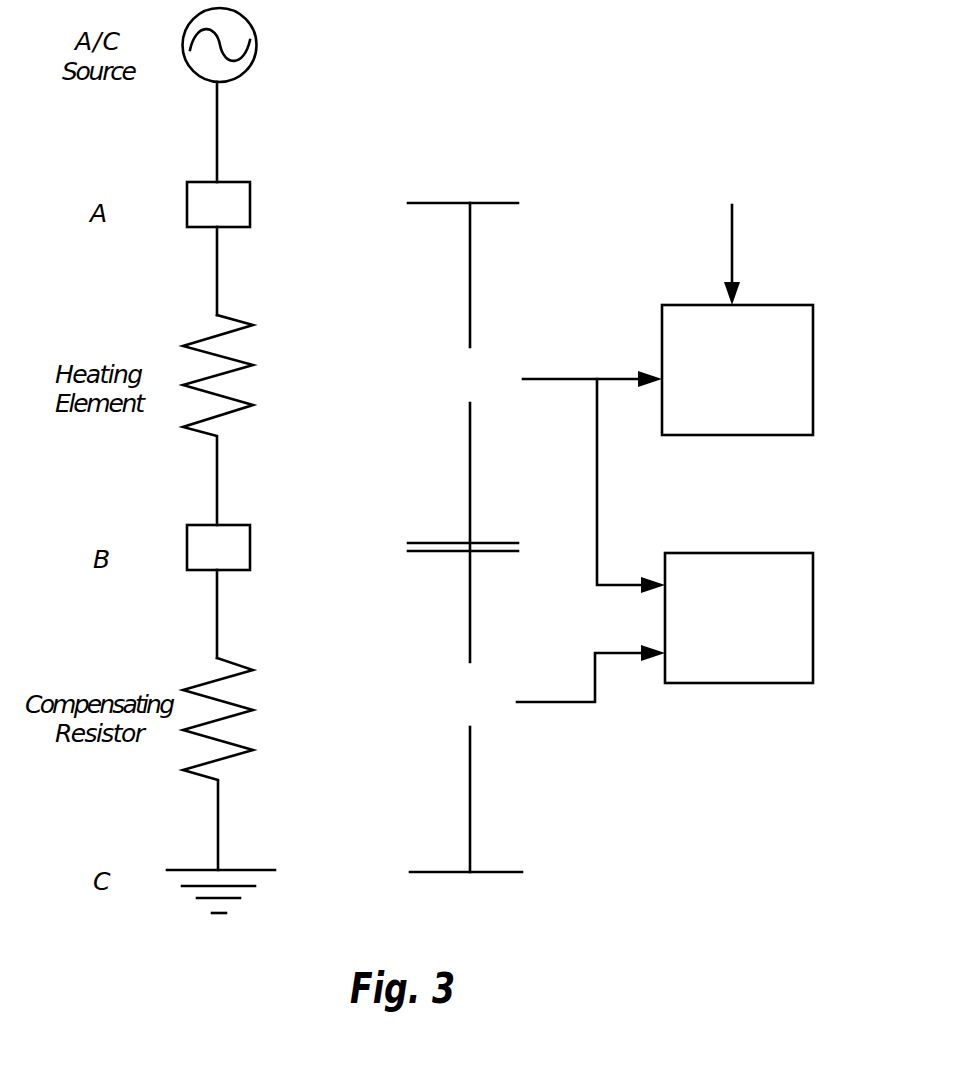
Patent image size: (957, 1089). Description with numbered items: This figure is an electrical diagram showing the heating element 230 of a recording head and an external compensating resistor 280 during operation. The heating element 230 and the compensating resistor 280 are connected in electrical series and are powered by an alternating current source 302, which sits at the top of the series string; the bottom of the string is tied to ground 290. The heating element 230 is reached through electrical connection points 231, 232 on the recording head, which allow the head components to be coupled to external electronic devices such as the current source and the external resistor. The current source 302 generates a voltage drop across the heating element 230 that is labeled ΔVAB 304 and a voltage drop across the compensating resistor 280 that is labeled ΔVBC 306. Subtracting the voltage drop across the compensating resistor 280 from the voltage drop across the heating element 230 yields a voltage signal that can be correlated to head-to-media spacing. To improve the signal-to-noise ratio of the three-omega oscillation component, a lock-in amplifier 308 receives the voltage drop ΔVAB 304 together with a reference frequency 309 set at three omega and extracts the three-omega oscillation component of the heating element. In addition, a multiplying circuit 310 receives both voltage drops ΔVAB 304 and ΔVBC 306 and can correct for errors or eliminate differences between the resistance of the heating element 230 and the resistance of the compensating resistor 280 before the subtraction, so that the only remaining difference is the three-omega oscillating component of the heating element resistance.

The alternating current source 302 is at (257, 32).
The electrical connection point 231 is at (250, 200).
The heating element 230 is at (247, 362).
The electrical connection point 232 is at (250, 547).
The compensating resistor 280 is at (247, 748).
The ground 290 is at (253, 867).
The voltage drop ΔVAB 304 is at (490, 353).
The voltage drop ΔVBC 306 is at (497, 677).
The lock-in amplifier 308 is at (753, 435).
The reference frequency 309 is at (732, 252).
The multiplying circuit 310 is at (753, 683).